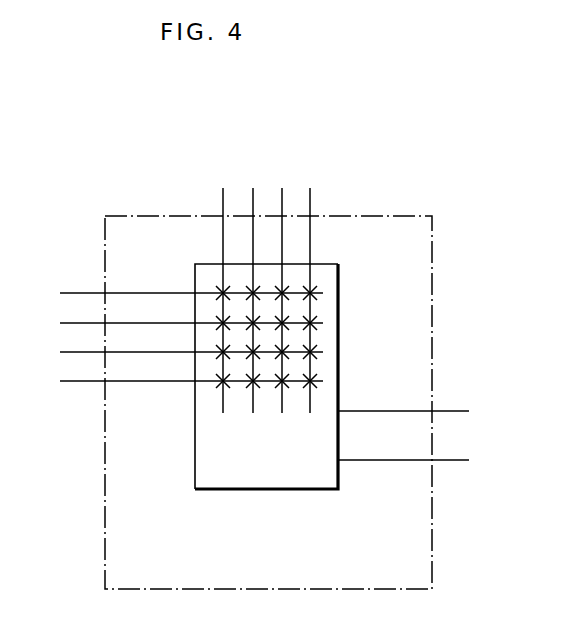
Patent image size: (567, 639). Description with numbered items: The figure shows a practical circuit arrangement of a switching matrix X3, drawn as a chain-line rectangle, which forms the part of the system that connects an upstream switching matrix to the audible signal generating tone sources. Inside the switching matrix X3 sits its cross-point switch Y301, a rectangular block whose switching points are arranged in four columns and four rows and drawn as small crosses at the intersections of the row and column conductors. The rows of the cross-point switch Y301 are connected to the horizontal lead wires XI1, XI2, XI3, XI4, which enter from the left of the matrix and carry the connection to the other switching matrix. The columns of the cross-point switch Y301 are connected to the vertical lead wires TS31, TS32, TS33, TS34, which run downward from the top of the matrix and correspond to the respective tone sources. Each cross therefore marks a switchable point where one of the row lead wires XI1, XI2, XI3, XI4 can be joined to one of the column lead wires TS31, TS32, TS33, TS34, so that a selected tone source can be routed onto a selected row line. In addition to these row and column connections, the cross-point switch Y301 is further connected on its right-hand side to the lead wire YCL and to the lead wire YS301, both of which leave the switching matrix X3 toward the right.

The switching matrix X3 is at (268, 402).
The cross-point switch Y301 is at (266, 376).
The lead wire TS31 is at (223, 273).
The lead wire TS32 is at (253, 273).
The lead wire TS33 is at (282, 273).
The lead wire TS34 is at (310, 276).
The lead wire XI1 is at (171, 381).
The lead wire XI2 is at (171, 352).
The lead wire XI3 is at (171, 323).
The lead wire XI4 is at (171, 293).
The lead wire YCL is at (421, 412).
The lead wire YS301 is at (431, 461).